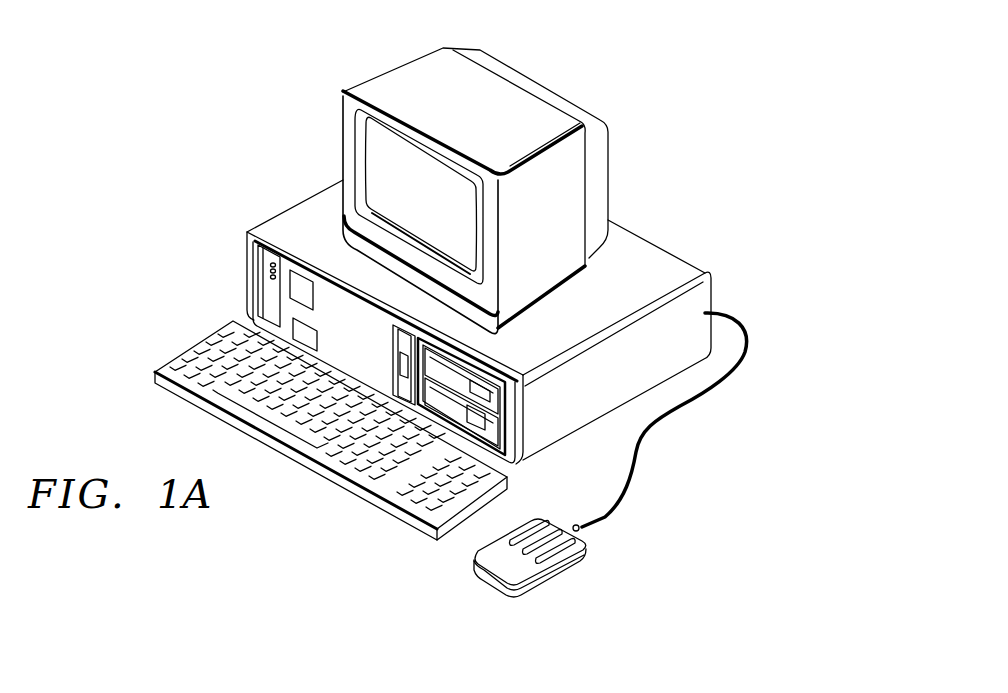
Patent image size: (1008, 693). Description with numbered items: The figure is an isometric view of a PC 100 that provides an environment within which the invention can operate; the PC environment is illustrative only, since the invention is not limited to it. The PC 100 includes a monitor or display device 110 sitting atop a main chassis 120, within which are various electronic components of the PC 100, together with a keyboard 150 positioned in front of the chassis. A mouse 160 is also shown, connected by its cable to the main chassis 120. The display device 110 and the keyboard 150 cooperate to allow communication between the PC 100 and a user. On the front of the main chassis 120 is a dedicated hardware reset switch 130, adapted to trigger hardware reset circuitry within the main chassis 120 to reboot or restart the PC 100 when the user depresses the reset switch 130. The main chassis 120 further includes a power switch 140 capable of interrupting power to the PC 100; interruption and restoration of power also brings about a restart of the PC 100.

The PC 100 is at (556, 60).
The monitor or display device 110 is at (388, 78).
The main chassis 120 is at (655, 257).
The dedicated hardware reset switch 130 is at (288, 315).
The power switch 140 is at (300, 278).
The keyboard 150 is at (181, 364).
The mouse 160 is at (567, 567).